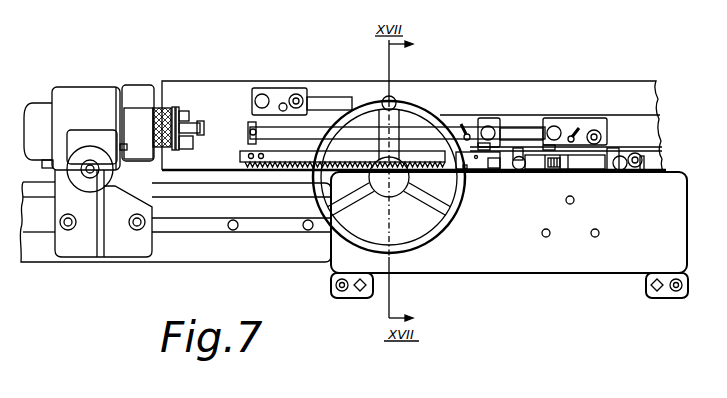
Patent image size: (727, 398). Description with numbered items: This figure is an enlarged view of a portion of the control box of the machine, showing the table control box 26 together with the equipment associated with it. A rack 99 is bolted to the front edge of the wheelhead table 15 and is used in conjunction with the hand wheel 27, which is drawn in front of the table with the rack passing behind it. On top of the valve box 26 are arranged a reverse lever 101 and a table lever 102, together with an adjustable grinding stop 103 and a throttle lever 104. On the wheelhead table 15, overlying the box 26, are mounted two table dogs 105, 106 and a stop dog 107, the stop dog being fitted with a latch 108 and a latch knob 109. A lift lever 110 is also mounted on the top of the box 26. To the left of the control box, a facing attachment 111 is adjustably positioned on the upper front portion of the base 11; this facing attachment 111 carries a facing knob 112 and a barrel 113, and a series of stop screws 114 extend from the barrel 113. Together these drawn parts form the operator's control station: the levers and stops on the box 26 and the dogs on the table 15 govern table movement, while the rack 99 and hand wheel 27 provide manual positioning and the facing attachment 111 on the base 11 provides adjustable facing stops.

The base 11 is at (277, 251).
The wheelhead table 15 is at (643, 95).
The table control box 26 is at (447, 264).
The hand wheel 27 is at (347, 243).
The rack 99 is at (262, 168).
The reverse lever 101 is at (523, 150).
The table lever 102 is at (517, 172).
The adjustable grinding stop 103 is at (604, 172).
The throttle lever 104 is at (624, 172).
The table dog 105 is at (567, 118).
The table dog 106 is at (499, 121).
The stop dog 107 is at (263, 88).
The latch 108 is at (282, 102).
The latch knob 109 is at (299, 96).
The lift lever 110 is at (477, 155).
The facing attachment 111 is at (85, 241).
The facing knob 112 is at (89, 147).
The barrel 113 is at (165, 108).
The stop screws 114 is at (199, 120).